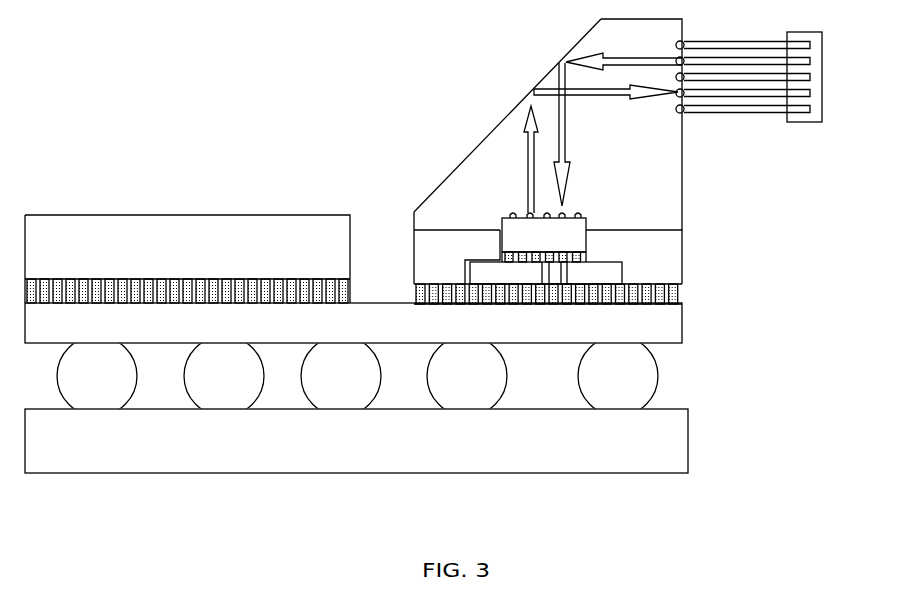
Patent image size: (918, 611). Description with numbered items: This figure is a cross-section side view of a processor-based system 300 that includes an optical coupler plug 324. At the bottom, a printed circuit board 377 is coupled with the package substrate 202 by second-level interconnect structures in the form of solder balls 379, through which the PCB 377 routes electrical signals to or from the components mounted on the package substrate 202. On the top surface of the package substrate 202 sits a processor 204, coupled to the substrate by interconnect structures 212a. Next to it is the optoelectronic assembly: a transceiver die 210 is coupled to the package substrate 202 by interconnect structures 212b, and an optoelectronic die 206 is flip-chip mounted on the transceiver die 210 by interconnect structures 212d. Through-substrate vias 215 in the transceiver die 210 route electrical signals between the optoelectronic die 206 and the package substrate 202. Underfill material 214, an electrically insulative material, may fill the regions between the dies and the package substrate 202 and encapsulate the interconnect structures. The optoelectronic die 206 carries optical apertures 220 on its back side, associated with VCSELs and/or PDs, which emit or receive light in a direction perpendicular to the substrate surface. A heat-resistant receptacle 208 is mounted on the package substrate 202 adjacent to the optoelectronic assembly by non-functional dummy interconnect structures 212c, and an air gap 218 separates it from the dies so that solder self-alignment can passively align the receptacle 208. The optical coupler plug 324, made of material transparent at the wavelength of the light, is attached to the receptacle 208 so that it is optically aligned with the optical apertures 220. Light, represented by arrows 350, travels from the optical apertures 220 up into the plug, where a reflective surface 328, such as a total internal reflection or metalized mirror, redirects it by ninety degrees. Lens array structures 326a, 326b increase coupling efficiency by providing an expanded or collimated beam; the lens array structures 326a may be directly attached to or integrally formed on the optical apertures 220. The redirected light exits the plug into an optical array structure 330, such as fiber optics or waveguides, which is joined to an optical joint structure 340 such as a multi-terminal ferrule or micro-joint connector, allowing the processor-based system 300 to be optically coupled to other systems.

The processor-based system 300 is at (190, 115).
The processor 204 is at (153, 257).
The package substrate 202 is at (359, 335).
The optoelectronic die 206 is at (516, 246).
The receptacle 208 is at (418, 259).
The transceiver die 210 is at (496, 283).
The interconnect structures 212a is at (348, 306).
The interconnect structures 212b is at (620, 305).
The dummy interconnect structures 212c is at (422, 305).
The interconnect structures 212d is at (587, 258).
The underfill material 214 is at (410, 291).
The through-substrate vias 215 is at (550, 273).
The air gap 218 is at (500, 230).
The optical apertures 220 is at (513, 213).
The optical coupler plug 324 is at (587, 160).
The lens array structures 326a is at (580, 213).
The lens array structures 326b is at (676, 109).
The reflective surface 328 is at (507, 116).
The optical array structure 330 is at (745, 114).
The optical joint structure 340 is at (808, 123).
The arrows 350 is at (537, 89).
The printed circuit board 377 is at (327, 451).
The solder balls 379 is at (78, 386).